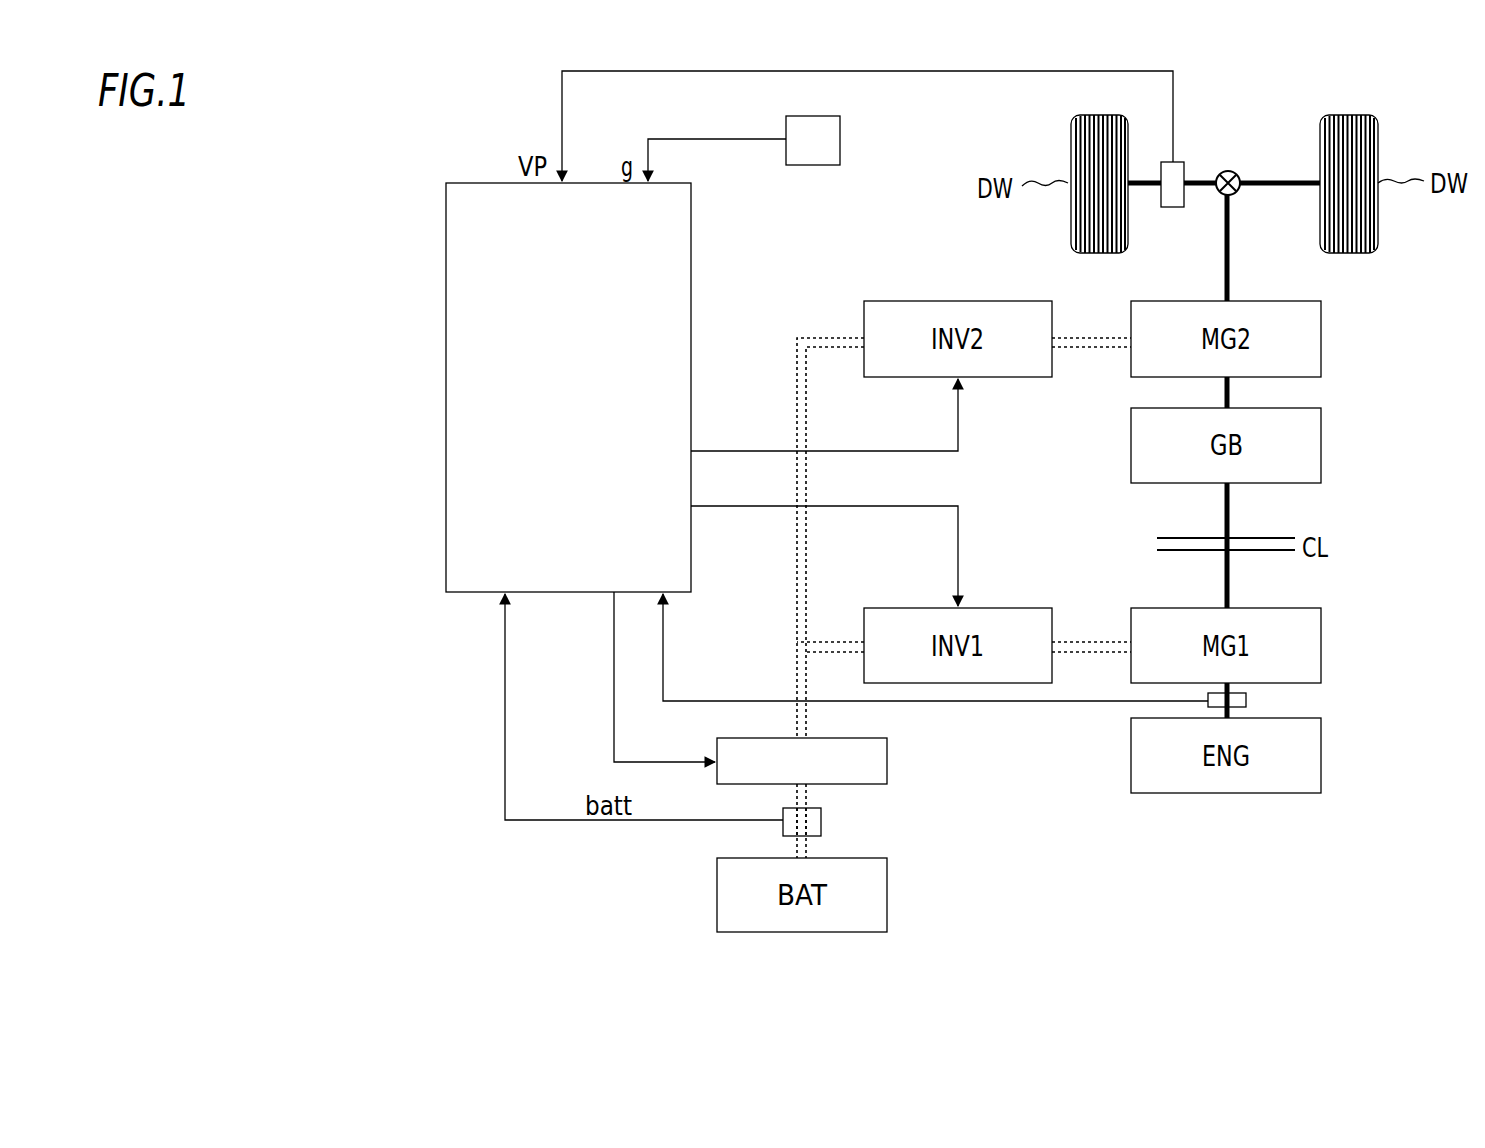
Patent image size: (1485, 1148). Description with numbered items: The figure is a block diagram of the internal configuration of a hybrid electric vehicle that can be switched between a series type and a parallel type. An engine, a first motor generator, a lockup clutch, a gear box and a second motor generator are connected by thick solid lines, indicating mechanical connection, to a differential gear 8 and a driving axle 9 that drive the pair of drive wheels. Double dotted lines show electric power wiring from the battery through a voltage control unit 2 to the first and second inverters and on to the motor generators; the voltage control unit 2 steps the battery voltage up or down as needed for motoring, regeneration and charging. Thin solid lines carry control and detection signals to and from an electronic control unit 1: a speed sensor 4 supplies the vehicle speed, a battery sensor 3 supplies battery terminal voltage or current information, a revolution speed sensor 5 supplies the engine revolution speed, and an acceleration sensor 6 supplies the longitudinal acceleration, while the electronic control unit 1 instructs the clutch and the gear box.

The electronic control unit (ECU) 1 is at (691, 248).
The voltage control unit (VCU) 2 is at (887, 760).
The battery sensor 3 is at (821, 820).
The speed sensor 4 is at (1177, 207).
The revolution speed sensor 5 is at (1246, 700).
The acceleration sensor 6 is at (840, 140).
The differential gear 8 is at (1228, 170).
The driving axle 9 is at (1287, 188).